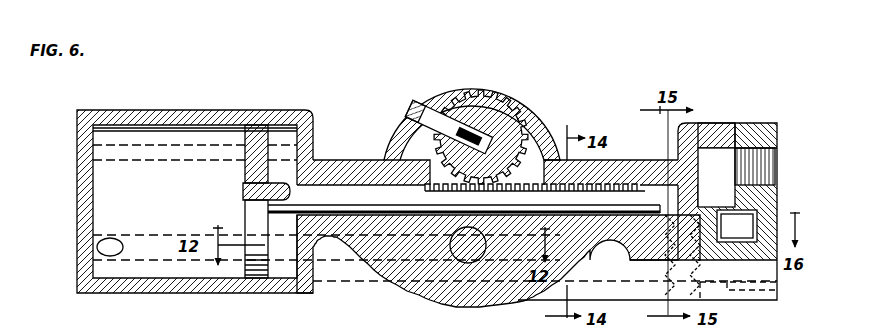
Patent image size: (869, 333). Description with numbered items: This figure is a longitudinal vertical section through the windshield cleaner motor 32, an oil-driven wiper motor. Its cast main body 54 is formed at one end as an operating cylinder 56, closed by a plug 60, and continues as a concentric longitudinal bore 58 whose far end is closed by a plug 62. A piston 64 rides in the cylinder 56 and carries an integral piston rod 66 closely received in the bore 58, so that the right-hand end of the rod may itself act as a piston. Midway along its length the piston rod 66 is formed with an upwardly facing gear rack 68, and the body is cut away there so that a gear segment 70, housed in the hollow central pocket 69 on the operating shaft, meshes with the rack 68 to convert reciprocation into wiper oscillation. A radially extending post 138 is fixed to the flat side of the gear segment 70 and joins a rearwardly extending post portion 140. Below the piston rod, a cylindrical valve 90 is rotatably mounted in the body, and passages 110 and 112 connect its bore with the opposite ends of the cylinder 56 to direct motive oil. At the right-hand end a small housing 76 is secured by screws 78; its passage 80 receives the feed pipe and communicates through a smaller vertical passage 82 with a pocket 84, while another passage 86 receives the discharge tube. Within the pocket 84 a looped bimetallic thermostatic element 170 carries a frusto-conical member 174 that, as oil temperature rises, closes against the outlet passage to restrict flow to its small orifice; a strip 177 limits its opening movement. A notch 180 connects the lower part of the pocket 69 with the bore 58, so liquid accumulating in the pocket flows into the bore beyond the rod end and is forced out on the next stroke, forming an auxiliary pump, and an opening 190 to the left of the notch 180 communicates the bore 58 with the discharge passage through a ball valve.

The plug 60 is at (77, 146).
The operating cylinder 56 is at (152, 128).
The piston 64 is at (256, 128).
The passage 110 is at (97, 247).
The bore 58 is at (360, 183).
The passage 112 is at (392, 284).
The cylindrical valve 90 is at (470, 300).
The main body 54 is at (394, 95).
The central pocket 69 is at (465, 67).
The windshield cleaner motor 32 is at (549, 90).
The gear segment 70 is at (503, 102).
The post portion 140 is at (406, 112).
The post 138 is at (435, 116).
The piston rod 66 is at (357, 196).
The gear rack 68 is at (433, 187).
The notch 180 is at (556, 188).
The opening 190 is at (514, 188).
The screws 78 is at (743, 124).
The passage 80 is at (722, 148).
The small housing 76 is at (756, 135).
The passage 82 is at (710, 187).
The strip 177 is at (777, 182).
The pocket 84 is at (748, 217).
The thermostatic element 170 is at (748, 224).
The frusto-conical member 174 is at (710, 260).
The passage 86 is at (737, 305).
The plug 62 is at (670, 162).